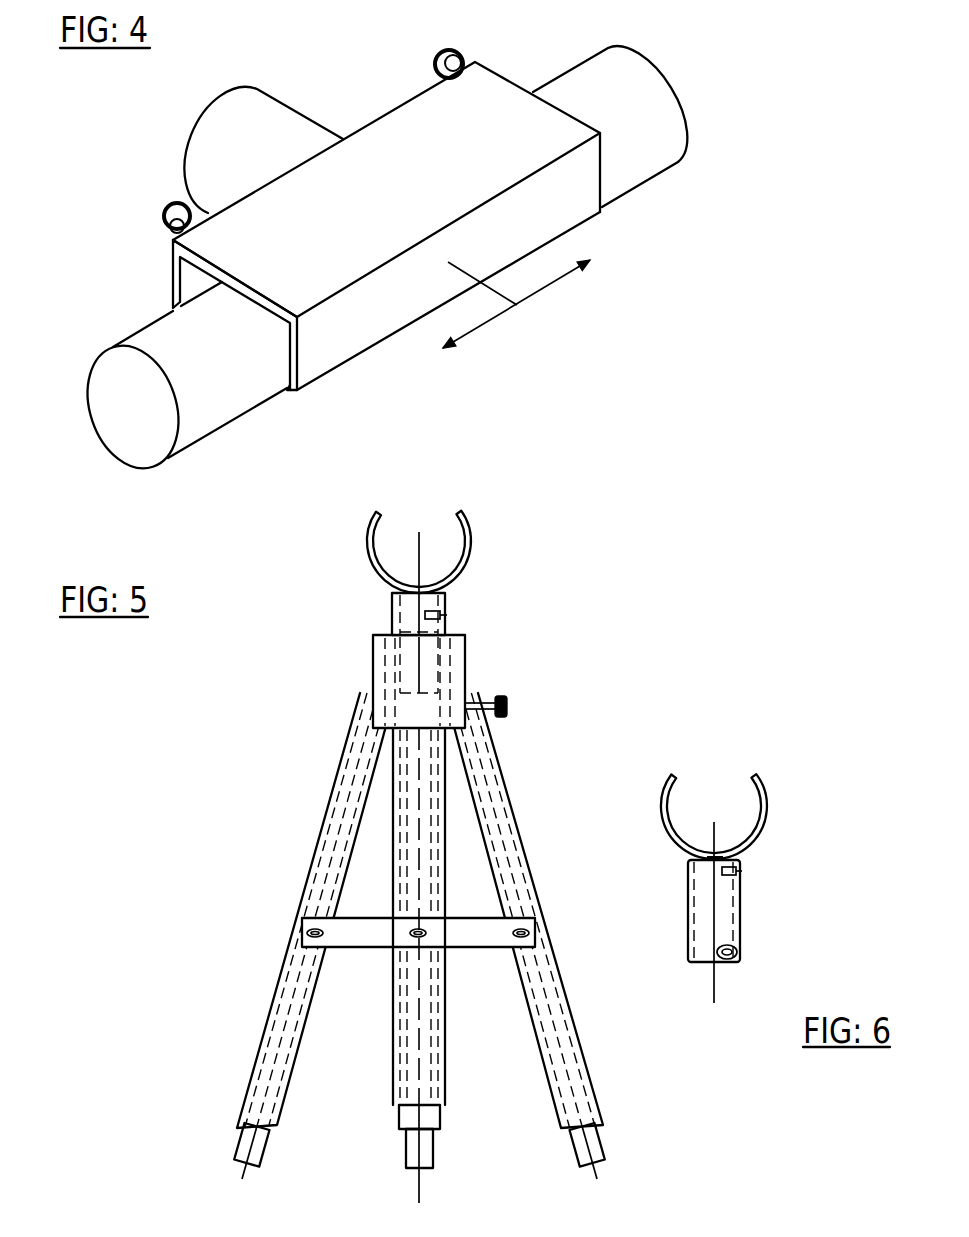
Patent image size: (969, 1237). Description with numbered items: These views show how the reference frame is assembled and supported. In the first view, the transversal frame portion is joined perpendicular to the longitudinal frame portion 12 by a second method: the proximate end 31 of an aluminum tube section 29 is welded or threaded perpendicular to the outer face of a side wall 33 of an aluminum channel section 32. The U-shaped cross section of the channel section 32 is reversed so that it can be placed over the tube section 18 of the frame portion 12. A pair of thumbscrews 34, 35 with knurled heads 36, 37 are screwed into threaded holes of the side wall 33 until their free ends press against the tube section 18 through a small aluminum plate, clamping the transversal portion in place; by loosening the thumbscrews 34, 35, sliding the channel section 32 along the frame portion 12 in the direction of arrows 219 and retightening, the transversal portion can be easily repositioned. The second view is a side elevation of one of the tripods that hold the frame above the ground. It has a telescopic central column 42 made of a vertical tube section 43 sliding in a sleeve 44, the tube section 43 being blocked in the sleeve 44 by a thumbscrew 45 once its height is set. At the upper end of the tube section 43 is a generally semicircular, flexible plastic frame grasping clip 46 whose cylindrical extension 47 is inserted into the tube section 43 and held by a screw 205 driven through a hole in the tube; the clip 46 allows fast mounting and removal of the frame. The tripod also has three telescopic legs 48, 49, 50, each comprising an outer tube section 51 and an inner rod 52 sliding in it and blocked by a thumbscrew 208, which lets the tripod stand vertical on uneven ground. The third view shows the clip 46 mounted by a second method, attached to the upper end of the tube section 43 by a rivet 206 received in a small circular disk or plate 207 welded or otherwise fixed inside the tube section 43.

In FIG. 4, the longitudinal elongated straight frame portion 12 is at (200, 432).
In FIG. 4, the tube section 18 is at (150, 332).
In FIG. 4, the tube section 29 is at (207, 132).
In FIG. 4, the proximate end 31 is at (303, 163).
In FIG. 4, the channel section 32 is at (602, 214).
In FIG. 4, the side wall 33 is at (173, 280).
In FIG. 4, the thumbscrew 34 is at (172, 232).
In FIG. 4, the thumbscrew 35 is at (468, 62).
In FIG. 4, the knurled head 36 is at (170, 213).
In FIG. 4, the knurled head 37 is at (434, 62).
In FIG. 4, the arrows 219 is at (498, 315).
In FIG. 5, the telescopic central column 42 is at (452, 862).
In FIG. 5, the vertical tube section 43 is at (446, 1055).
In FIG. 6, the vertical tube section 43 is at (740, 920).
In FIG. 5, the sleeve 44 is at (466, 672).
In FIG. 5, the thumbscrew 45 is at (508, 706).
In FIG. 5, the frame grasping clip 46 is at (470, 520).
In FIG. 6, the frame grasping clip 46 is at (770, 790).
In FIG. 5, the cylindrical extension 47 is at (392, 615).
In FIG. 5, the telescopic leg 48 is at (240, 1112).
In FIG. 5, the telescopic leg 49 is at (598, 1097).
In FIG. 5, the telescopic leg 50 is at (441, 1116).
In FIG. 5, the outer tube section 51 is at (272, 1003).
In FIG. 5, the inner rod 52 is at (262, 1157).
In FIG. 5, the screw 205 is at (447, 617).
In FIG. 6, the rivet 206 is at (693, 875).
In FIG. 6, the circular disk or plate 207 is at (740, 872).
In FIG. 5, the thumbscrew 208 is at (302, 940).